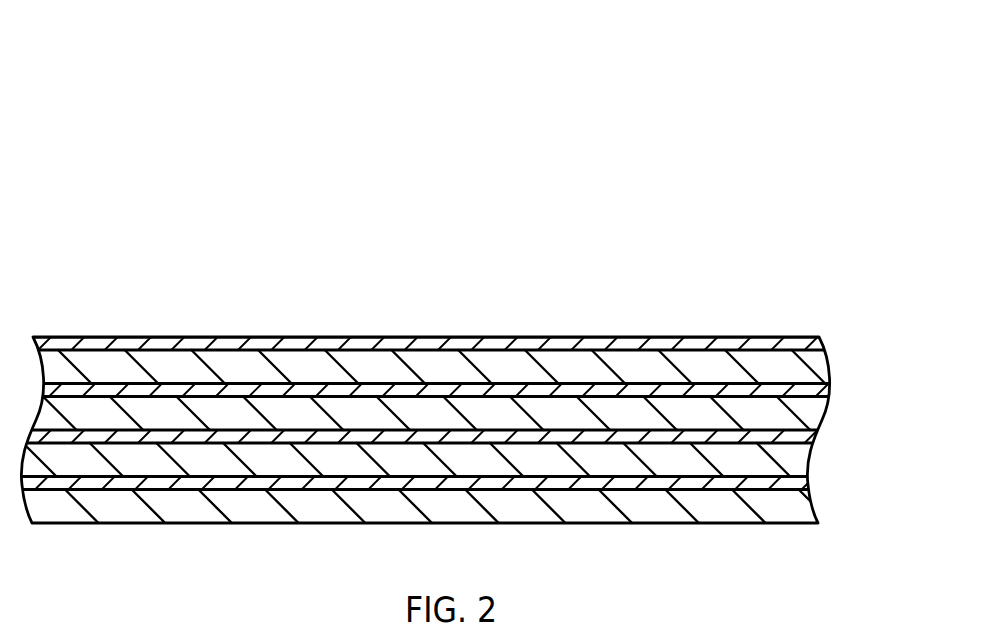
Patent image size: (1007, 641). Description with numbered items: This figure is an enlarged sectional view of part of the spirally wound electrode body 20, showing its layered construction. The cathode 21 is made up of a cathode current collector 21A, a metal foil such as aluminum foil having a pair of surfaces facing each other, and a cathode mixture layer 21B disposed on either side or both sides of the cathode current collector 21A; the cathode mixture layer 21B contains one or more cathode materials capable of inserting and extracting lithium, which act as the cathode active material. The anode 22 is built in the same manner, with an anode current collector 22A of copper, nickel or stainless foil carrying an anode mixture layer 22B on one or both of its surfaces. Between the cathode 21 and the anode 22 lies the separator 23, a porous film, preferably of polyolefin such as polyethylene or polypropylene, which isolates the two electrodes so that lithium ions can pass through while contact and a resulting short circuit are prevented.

The spirally wound electrode body 20 is at (738, 131).
The cathode 21 is at (68, 243).
The cathode current collector 21A is at (98, 387).
The cathode mixture layer 21B is at (232, 418).
The anode 22 is at (428, 243).
The anode current collector 22A is at (455, 487).
The anode mixture layer 22B is at (575, 503).
The separator 23 is at (730, 437).